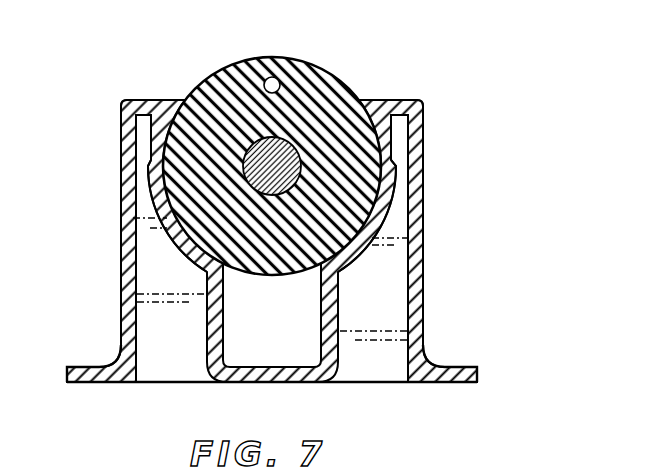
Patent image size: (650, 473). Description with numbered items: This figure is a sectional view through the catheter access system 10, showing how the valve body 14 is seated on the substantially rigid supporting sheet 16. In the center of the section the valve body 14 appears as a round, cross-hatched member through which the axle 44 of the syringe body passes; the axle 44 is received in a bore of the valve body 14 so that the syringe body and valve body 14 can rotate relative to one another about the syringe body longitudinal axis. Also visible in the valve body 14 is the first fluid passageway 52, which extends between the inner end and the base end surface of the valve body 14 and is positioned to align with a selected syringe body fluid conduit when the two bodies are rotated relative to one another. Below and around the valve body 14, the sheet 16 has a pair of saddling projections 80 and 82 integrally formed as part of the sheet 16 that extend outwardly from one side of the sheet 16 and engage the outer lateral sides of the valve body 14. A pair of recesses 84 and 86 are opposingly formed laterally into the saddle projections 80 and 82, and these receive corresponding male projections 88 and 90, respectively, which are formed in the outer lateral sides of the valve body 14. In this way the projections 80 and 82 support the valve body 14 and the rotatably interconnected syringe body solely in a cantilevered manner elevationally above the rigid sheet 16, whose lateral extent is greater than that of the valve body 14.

The catheter access system 10 is at (433, 58).
The valve body 14 is at (317, 61).
The rigid supporting sheet 16 is at (447, 372).
The axle 44 is at (280, 195).
The first fluid passageway 52 is at (276, 77).
The saddling projection 80 is at (418, 250).
The saddling projection 82 is at (121, 282).
The recess 84 is at (385, 176).
The recess 86 is at (153, 191).
The male projection 88 is at (390, 168).
The male projection 90 is at (158, 160).